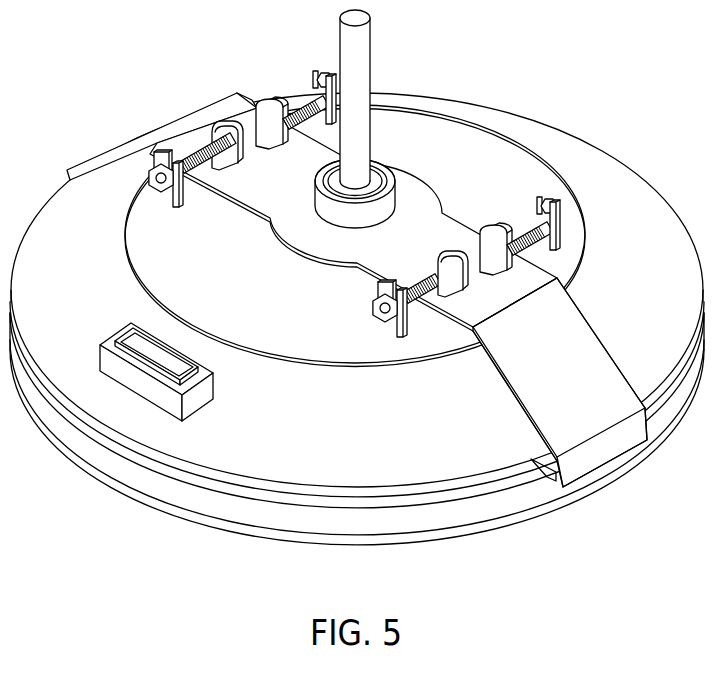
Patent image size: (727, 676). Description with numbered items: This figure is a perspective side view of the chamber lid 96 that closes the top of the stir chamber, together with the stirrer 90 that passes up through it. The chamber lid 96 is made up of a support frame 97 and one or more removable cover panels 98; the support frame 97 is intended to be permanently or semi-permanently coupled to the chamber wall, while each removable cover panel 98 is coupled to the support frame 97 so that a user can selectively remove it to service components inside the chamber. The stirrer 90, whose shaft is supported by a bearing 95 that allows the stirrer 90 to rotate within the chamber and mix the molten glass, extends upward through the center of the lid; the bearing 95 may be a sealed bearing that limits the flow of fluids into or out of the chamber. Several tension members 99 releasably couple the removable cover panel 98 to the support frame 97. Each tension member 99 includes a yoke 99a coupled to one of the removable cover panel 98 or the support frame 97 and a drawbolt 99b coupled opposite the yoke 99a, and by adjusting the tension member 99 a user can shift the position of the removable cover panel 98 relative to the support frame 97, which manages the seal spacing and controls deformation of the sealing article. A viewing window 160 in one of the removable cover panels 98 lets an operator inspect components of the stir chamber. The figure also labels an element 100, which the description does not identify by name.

The stirrer 90 is at (365, 49).
The bearing 95 is at (376, 172).
The chamber lid 96 is at (616, 64).
The support frame 97 is at (604, 364).
The removable cover panel 98 is at (365, 338).
The tension member 99 is at (319, 238).
The yoke 99a is at (175, 205).
The drawbolt 99b is at (147, 181).
The mounting plate 100 is at (376, 279).
The viewing window 160 is at (115, 344).